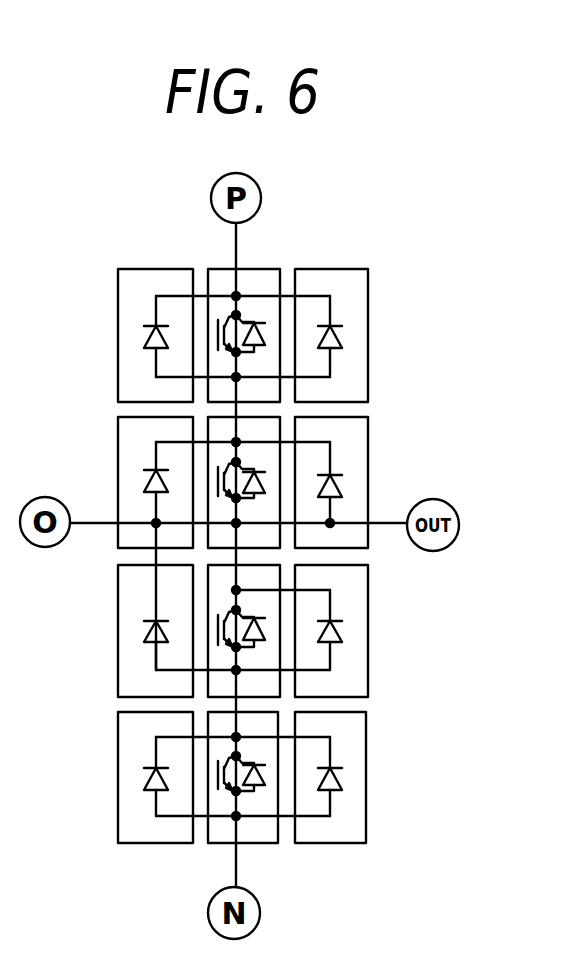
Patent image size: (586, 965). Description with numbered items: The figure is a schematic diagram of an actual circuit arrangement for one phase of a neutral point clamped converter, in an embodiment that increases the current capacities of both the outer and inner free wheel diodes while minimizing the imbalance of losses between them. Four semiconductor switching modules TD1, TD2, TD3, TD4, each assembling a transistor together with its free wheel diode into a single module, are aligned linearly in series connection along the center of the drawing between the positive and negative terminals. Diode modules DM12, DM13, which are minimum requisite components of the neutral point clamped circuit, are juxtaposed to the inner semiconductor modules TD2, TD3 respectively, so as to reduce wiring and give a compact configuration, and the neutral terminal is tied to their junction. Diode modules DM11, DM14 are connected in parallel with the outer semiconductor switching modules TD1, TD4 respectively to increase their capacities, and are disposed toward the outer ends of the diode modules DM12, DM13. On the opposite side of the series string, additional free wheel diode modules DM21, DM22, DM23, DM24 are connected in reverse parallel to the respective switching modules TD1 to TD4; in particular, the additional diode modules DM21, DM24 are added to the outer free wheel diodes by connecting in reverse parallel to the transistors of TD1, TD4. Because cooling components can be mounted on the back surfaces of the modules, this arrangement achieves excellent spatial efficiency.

The diode module DM11 is at (118, 338).
The diode module DM12 is at (118, 452).
The diode module DM13 is at (118, 630).
The diode module DM14 is at (117, 775).
The additional diode module DM21 is at (368, 327).
The additional diode module DM22 is at (368, 458).
The additional diode module DM23 is at (367, 640).
The additional diode module DM24 is at (365, 803).
The semiconductor switching module TD1 is at (263, 269).
The semiconductor switching module TD2 is at (265, 435).
The semiconductor switching module TD3 is at (270, 583).
The semiconductor switching module TD4 is at (264, 843).